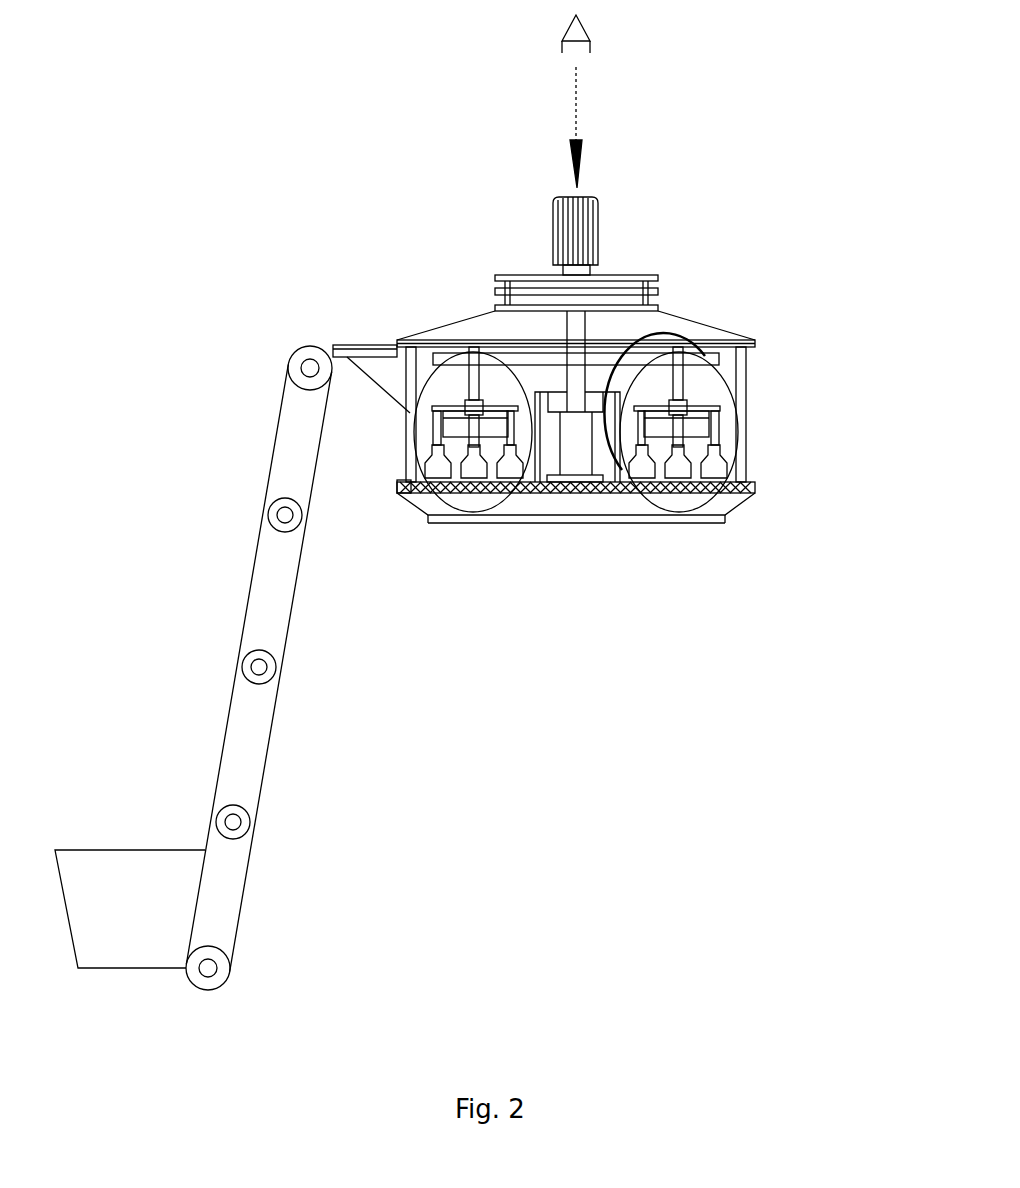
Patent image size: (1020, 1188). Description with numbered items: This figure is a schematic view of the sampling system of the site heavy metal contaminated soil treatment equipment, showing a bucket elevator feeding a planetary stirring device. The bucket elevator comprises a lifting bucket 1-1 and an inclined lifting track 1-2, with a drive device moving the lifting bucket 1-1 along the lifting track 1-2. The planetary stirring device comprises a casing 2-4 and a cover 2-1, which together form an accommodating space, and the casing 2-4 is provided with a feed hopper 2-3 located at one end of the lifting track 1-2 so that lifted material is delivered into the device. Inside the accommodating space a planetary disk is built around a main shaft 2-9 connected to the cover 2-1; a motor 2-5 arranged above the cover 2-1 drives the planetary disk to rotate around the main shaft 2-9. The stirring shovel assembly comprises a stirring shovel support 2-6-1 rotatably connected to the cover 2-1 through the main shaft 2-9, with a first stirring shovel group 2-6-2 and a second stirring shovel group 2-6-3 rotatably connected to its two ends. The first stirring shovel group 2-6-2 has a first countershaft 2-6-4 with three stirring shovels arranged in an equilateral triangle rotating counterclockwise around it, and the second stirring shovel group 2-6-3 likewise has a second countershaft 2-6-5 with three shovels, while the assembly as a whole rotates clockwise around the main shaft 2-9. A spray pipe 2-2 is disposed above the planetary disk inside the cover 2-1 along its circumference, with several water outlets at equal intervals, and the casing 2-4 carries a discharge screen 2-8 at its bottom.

The lifting bucket 1-1 is at (165, 865).
The lifting track 1-2 is at (245, 738).
The cover 2-1 is at (667, 307).
The spray pipe 2-2 is at (668, 333).
The feed hopper 2-3 is at (345, 367).
The casing 2-4 is at (405, 487).
The motor 2-5 is at (550, 225).
The stirring shovel support 2-6-1 is at (480, 345).
The first stirring shovel group 2-6-2 is at (430, 372).
The second stirring shovel group 2-6-3 is at (727, 367).
The first countershaft 2-6-4 is at (463, 373).
The second countershaft 2-6-5 is at (687, 367).
The discharge screen 2-8 is at (568, 492).
The main shaft 2-9 is at (572, 318).